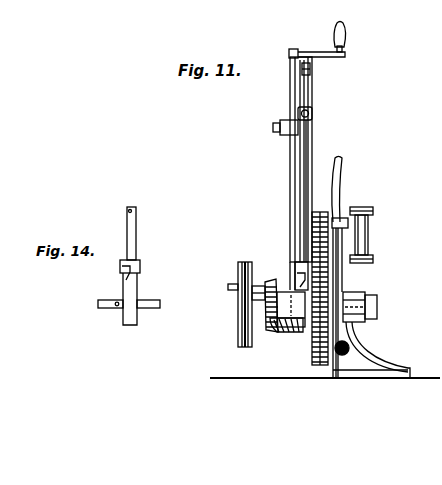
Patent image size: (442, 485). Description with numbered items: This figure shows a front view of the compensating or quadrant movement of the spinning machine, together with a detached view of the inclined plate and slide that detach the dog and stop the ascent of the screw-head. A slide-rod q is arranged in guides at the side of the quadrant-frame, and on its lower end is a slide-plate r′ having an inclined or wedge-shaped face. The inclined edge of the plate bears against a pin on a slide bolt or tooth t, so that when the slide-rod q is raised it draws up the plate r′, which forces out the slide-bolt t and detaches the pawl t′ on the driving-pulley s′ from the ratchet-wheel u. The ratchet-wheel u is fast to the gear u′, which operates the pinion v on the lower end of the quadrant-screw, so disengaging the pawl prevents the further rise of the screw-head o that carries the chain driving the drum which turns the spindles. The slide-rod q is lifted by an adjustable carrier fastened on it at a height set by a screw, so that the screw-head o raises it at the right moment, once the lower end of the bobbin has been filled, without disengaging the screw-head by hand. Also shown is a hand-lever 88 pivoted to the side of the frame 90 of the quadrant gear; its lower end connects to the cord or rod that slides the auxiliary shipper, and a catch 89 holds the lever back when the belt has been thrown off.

In FIG. 11, the slide-rod q is at (317, 156).
In FIG. 14, the slide-rod q is at (135, 233).
In FIG. 11, the screw-head o is at (292, 121).
In FIG. 11, the hand-lever 88 is at (342, 267).
In FIG. 11, the catch 89 is at (352, 206).
In FIG. 11, the frame 90 is at (371, 335).
In FIG. 11, the driving-pulley s′ is at (240, 297).
In FIG. 14, the driving-pulley s′ is at (111, 309).
In FIG. 11, the pawl t′ is at (260, 279).
In FIG. 11, the gear u′ is at (302, 288).
In FIG. 11, the ratchet-wheel u is at (266, 305).
In FIG. 11, the slide bolt or tooth t is at (291, 309).
In FIG. 14, the slide bolt or tooth t is at (129, 298).
In FIG. 11, the pinion v is at (286, 331).
In FIG. 14, the slide-plate r′ is at (130, 292).